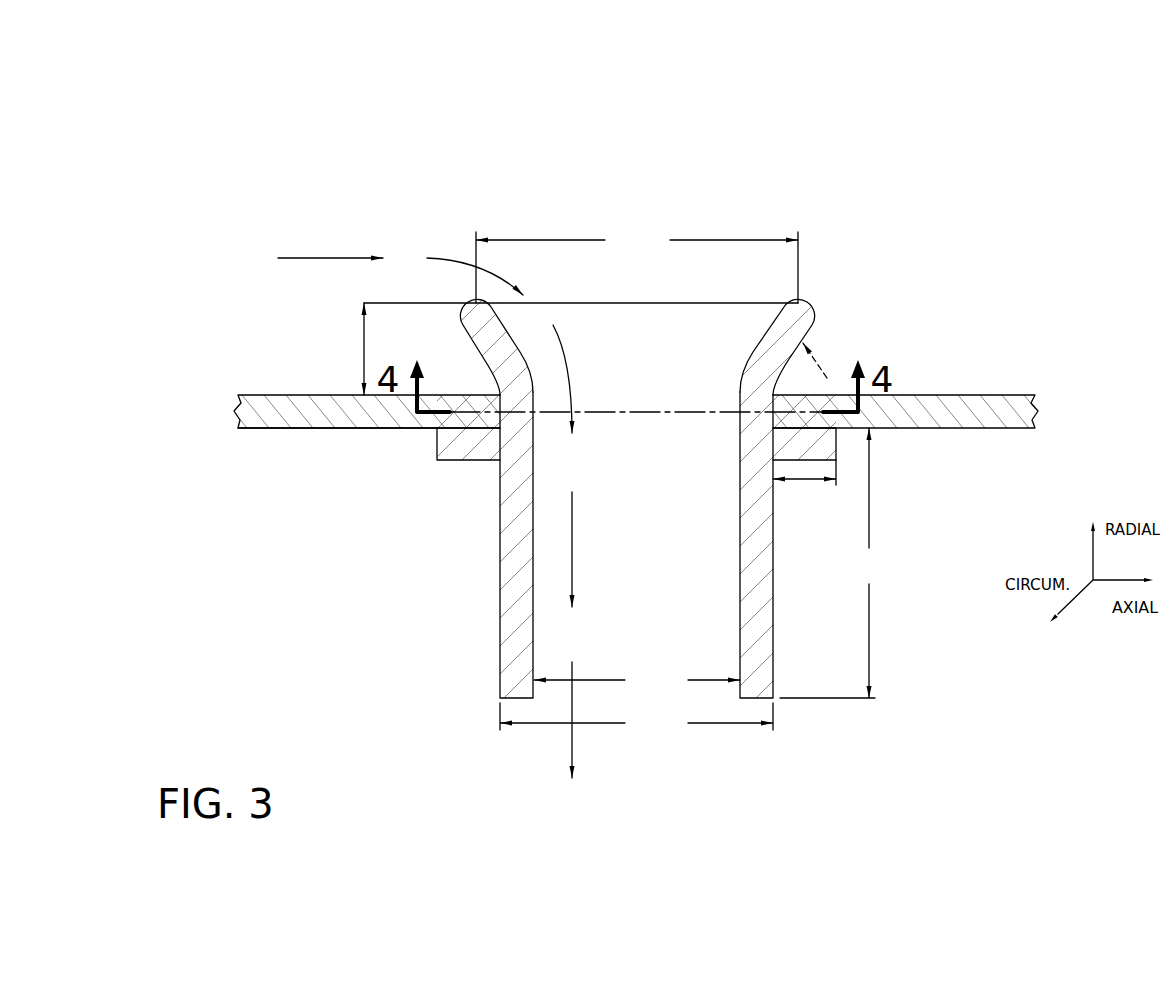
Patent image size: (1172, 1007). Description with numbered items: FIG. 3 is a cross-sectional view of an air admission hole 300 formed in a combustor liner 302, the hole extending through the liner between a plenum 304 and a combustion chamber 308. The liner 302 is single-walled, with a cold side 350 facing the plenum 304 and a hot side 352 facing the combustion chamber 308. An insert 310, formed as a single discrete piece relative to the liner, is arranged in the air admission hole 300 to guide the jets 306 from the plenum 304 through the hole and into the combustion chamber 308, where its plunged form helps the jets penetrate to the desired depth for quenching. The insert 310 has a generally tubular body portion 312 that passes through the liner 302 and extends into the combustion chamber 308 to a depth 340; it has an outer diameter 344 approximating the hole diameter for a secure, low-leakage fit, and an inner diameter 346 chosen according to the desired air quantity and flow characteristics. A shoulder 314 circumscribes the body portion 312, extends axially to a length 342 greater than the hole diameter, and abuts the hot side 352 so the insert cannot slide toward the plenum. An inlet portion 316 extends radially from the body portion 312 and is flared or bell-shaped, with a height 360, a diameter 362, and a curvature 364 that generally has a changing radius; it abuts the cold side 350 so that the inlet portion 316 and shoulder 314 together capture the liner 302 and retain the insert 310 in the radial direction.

The air admission hole 300 is at (751, 178).
The combustor liner 302 is at (1005, 395).
The plenum 304 is at (936, 273).
The jets 306 is at (331, 258).
The combustion chamber 308 is at (328, 584).
The insert 310 is at (625, 492).
The body portion 312 is at (500, 538).
The shoulder 314 is at (437, 452).
The inlet portion 316 is at (812, 311).
The depth 340 is at (835, 563).
The length 342 is at (800, 484).
The outer diameter 344 is at (636, 720).
The inner diameter 346 is at (637, 681).
The cold side 350 is at (250, 395).
The hot side 352 is at (327, 428).
The height 360 is at (362, 351).
The diameter 362 is at (637, 265).
The curvature 364 is at (822, 362).